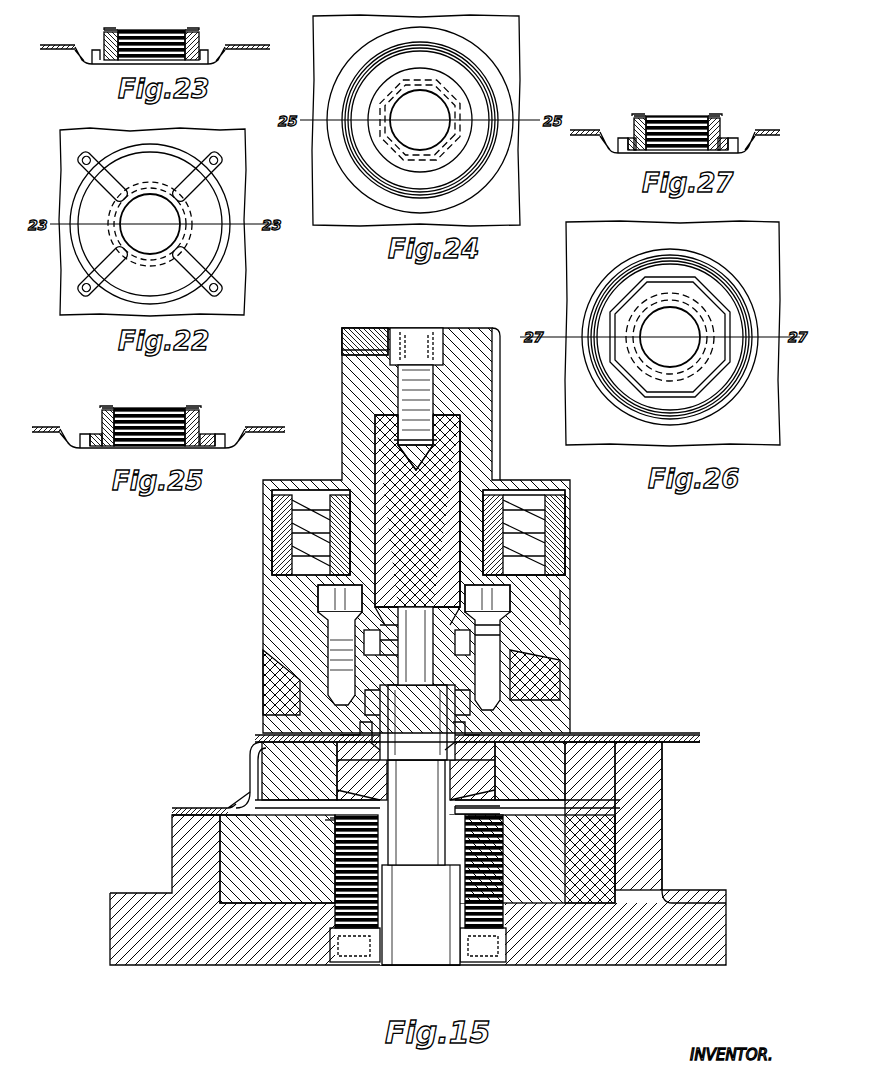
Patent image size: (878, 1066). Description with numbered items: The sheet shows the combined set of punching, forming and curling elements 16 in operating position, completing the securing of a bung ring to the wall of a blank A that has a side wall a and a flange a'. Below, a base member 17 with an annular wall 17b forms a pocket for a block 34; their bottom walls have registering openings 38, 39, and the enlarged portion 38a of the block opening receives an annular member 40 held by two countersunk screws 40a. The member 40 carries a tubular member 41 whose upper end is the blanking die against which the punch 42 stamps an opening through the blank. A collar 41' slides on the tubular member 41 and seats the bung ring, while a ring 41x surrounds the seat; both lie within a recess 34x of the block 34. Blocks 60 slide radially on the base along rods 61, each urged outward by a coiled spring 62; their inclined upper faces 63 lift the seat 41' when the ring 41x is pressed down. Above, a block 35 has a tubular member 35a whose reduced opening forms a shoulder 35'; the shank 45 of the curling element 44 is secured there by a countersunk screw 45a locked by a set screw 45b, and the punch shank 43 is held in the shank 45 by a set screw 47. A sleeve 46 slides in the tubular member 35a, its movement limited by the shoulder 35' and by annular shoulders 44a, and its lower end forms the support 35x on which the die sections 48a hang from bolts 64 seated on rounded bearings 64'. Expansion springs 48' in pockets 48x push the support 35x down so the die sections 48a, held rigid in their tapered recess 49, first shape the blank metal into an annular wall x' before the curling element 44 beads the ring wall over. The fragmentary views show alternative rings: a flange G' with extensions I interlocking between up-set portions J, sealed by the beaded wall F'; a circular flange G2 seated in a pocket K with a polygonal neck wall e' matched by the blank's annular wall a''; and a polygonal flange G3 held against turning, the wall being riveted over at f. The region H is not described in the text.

In FIG. 23, the beaded over wall F' is at (170, 27).
In FIG. 27, the beaded over wall F' is at (659, 113).
In FIG. 23, the flange G' is at (142, 58).
In FIG. 22, the flange G' is at (150, 206).
In FIG. 23, the up-set portions J is at (222, 62).
In FIG. 22, the up-set portions J is at (222, 258).
In FIG. 22, the extensions I is at (85, 330).
In FIG. 24, the blank A is at (510, 68).
In FIG. 26, the blank A is at (745, 225).
In FIG. 25, the blank A is at (262, 427).
In FIG. 15, the blank A is at (263, 735).
In FIG. 24, the pocket K is at (462, 193).
In FIG. 25, the pocket K is at (218, 428).
In FIG. 24, the flange G2 is at (398, 142).
In FIG. 25, the flange G2 is at (135, 443).
In FIG. 24, the polygonal outer wall of neck e' is at (420, 120).
In FIG. 27, the beaded over wall f is at (718, 130).
In FIG. 27, the flange G3 is at (661, 149).
In FIG. 26, the flange G3 is at (668, 336).
In FIG. 25, the annular wall a'' is at (136, 407).
In FIG. 15, the base member 17 is at (178, 966).
In FIG. 15, the annular wall 17b is at (645, 805).
In FIG. 15, the block 34 is at (252, 893).
In FIG. 15, the rod 61 is at (600, 808).
In FIG. 15, the flange a' is at (211, 800).
In FIG. 15, the side wall a is at (244, 775).
In FIG. 15, the coiled spring 62 is at (299, 771).
In FIG. 15, the conical seat H is at (340, 768).
In FIG. 15, the inclined upper face 63 is at (530, 775).
In FIG. 15, the collar 41' is at (437, 792).
In FIG. 15, the blocks 60 is at (500, 838).
In FIG. 15, the annular member 40 is at (503, 860).
In FIG. 15, the countersunk screws 40a is at (512, 890).
In FIG. 15, the recess 34x is at (320, 826).
In FIG. 15, the enlarged upper portion of opening 38a is at (335, 860).
In FIG. 15, the opening 38 is at (436, 890).
In FIG. 15, the opening 39 is at (436, 952).
In FIG. 15, the punch 42 is at (418, 766).
In FIG. 15, the tubular member 41 is at (410, 722).
In FIG. 15, the annular wall x' is at (412, 734).
In FIG. 15, the block 35 is at (416, 530).
In FIG. 15, the tubular member 35a is at (492, 437).
In FIG. 15, the set screw 45b is at (342, 343).
In FIG. 15, the countersunk screw 45a is at (433, 395).
In FIG. 15, the shoulder 35' is at (460, 416).
In FIG. 15, the shank 45 is at (393, 458).
In FIG. 15, the sleeve 46 is at (462, 468).
In FIG. 15, the set screw 47 is at (417, 589).
In FIG. 15, the annular shoulders 44a is at (417, 614).
In FIG. 15, the shank 43 is at (405, 615).
In FIG. 15, the expansion springs 48' is at (543, 532).
In FIG. 15, the pockets 48x is at (560, 545).
In FIG. 15, the die sections 48a is at (330, 690).
In FIG. 15, the bolt 64 is at (413, 647).
In FIG. 15, the rounded bearing 64' is at (542, 603).
In FIG. 15, the support 35x is at (570, 612).
In FIG. 15, the recess 49 is at (520, 675).
In FIG. 15, the set of punching, forming and curling elements 16 is at (431, 682).
In FIG. 15, the curling element 44 is at (500, 703).
In FIG. 15, the ring 41x is at (560, 745).